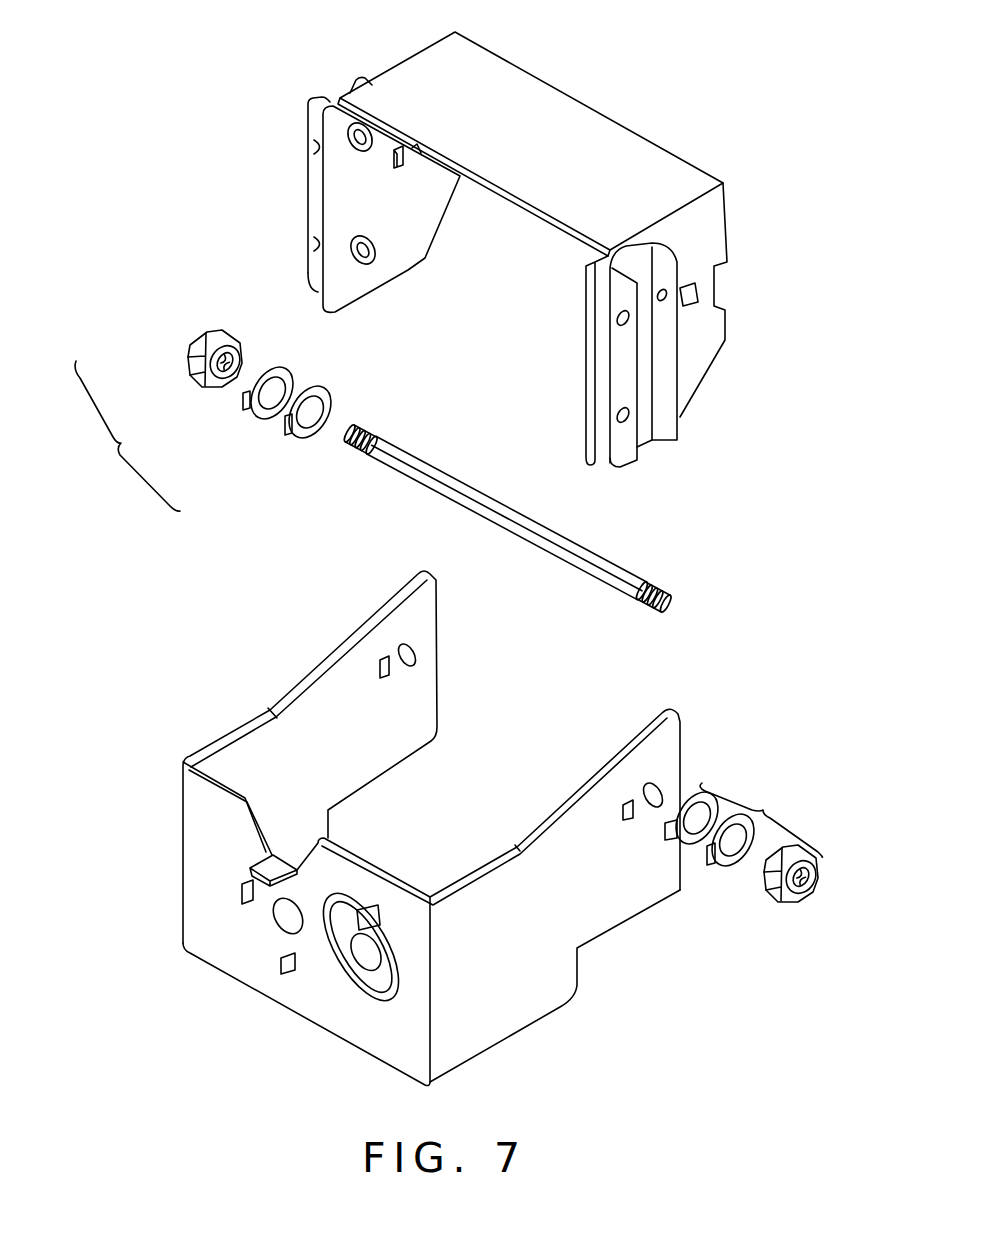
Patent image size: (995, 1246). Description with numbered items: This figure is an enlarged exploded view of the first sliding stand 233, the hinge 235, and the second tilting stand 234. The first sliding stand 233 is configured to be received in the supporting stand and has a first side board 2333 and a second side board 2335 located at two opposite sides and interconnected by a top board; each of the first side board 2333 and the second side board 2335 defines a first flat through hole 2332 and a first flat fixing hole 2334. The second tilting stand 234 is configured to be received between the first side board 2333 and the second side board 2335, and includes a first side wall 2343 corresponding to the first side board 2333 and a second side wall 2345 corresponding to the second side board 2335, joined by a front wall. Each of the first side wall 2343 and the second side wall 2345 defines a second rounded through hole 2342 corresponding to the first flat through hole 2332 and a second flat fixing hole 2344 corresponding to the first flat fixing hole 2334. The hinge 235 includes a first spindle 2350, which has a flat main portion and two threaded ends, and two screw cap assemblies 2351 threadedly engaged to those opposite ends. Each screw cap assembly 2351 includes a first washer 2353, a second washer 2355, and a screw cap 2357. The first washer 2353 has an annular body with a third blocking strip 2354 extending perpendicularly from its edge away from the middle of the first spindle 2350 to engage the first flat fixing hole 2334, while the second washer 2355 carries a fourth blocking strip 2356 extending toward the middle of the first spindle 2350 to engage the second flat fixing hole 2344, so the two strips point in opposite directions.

The first sliding stand 233 is at (388, 48).
The first flat through hole 2332 is at (700, 294).
The first side board 2333 is at (695, 338).
The first flat fixing hole 2334 is at (394, 160).
The second side board 2335 is at (350, 207).
The hinge 235 is at (175, 325).
The first spindle 2350 is at (393, 468).
The screw cap assembly 2351 is at (435, 609).
The first washer 2353 is at (257, 413).
The third blocking strip 2354 is at (243, 398).
The second washer 2355 is at (307, 433).
The fourth blocking strip 2356 is at (285, 428).
The screw cap 2357 is at (198, 368).
The second tilting stand 234 is at (220, 692).
The second rounded through hole 2342 is at (402, 648).
The first side wall 2343 is at (487, 1008).
The second flat fixing hole 2344 is at (380, 665).
The second side wall 2345 is at (235, 755).